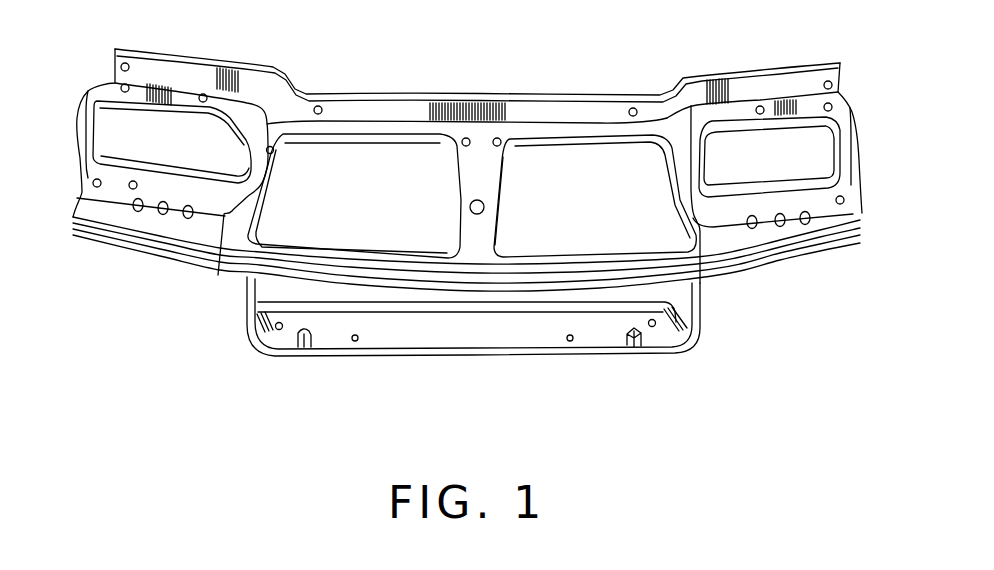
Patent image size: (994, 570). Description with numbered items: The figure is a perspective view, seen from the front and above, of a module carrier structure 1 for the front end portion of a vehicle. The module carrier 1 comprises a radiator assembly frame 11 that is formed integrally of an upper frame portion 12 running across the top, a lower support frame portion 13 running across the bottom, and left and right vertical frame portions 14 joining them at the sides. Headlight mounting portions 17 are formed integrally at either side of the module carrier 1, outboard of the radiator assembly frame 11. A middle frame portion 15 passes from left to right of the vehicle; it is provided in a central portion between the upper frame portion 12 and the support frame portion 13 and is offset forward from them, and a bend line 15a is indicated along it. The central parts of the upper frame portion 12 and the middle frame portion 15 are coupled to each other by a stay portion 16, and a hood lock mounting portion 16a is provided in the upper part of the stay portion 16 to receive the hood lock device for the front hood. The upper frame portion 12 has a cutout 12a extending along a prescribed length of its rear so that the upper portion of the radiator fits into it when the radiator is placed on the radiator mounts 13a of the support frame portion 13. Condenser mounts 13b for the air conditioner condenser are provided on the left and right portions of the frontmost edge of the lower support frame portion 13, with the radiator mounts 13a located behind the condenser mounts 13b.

The module carrier structure 1 is at (239, 299).
The radiator assembly frame 11 is at (380, 178).
The upper frame portion 12 is at (590, 113).
The cutout 12a is at (530, 93).
The lower support frame portion 13 is at (553, 340).
The radiator mounts 13a is at (279, 330).
The condenser mounts 13b is at (306, 347).
The vertical frame portions 14 is at (238, 195).
The middle frame portion 15 is at (517, 280).
The lower flange bend line 15a is at (470, 285).
The stay portion 16 is at (483, 238).
The hood lock mounting portion 16a is at (487, 148).
The headlight mounting portions 17 is at (133, 138).